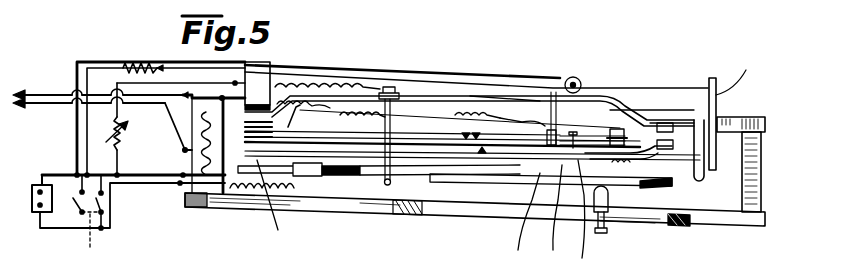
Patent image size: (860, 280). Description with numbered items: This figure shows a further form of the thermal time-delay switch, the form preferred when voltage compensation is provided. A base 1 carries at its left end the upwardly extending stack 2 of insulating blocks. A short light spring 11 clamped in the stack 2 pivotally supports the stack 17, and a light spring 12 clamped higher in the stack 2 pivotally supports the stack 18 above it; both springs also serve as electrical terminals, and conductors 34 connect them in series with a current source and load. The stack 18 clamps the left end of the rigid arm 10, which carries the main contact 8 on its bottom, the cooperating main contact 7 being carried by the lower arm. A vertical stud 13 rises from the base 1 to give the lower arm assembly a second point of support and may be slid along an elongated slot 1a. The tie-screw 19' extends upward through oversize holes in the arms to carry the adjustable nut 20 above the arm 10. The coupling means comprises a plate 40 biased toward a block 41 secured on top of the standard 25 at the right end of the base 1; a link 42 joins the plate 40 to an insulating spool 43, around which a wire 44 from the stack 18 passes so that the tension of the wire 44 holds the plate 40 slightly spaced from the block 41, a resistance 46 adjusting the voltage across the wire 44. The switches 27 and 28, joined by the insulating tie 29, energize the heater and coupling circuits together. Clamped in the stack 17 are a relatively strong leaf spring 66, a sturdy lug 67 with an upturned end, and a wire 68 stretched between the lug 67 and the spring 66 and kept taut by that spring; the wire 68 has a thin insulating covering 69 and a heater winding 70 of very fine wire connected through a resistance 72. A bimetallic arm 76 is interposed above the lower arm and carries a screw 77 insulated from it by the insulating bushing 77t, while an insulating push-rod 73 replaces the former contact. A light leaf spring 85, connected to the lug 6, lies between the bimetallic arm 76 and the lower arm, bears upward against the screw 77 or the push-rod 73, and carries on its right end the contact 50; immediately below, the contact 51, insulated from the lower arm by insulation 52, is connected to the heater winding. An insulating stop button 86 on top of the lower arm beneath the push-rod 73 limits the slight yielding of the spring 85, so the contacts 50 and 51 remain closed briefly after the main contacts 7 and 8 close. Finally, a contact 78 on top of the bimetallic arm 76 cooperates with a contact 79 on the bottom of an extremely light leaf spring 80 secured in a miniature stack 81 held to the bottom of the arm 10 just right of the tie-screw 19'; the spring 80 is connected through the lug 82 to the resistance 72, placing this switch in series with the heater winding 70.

The base 1 is at (246, 208).
The elongated slot 1a is at (422, 214).
The stack of insulating blocks 2 is at (202, 208).
The lug 6 is at (190, 170).
The switch contact 7 is at (673, 146).
The switch contact 8 is at (673, 129).
The arm 10 is at (512, 80).
The spring 11 is at (183, 149).
The spring 12 is at (186, 95).
The stud 13 is at (610, 205).
The stack 17 is at (375, 203).
The stack 18 is at (270, 62).
The tie-screw 19' is at (460, 121).
The adjustable nut 20 is at (392, 87).
The standard 25 is at (753, 160).
The switch 27 is at (78, 208).
The switch 28 is at (110, 214).
The insulating tie 29 is at (93, 238).
The conductors 34 is at (42, 95).
The plate 40 is at (739, 75).
The block 41 is at (730, 117).
The link 42 is at (697, 88).
The spool 43 is at (579, 78).
The wire 44 is at (364, 86).
The resistance 46 is at (123, 68).
The contact 50 is at (620, 153).
The contact 51 is at (625, 160).
The insulation 52 is at (584, 217).
The leaf spring 66 is at (342, 116).
The lug 67 is at (469, 114).
The wire 68 is at (320, 110).
The insulating covering 69 is at (446, 113).
The heater winding 70 is at (500, 118).
The resistance 72 is at (120, 139).
The push-rod 73 is at (552, 92).
The bimetallic arm 76 is at (628, 112).
The screw 77 is at (595, 140).
The insulating bushing 77t is at (610, 136).
The contact 78 is at (625, 139).
The contact 79 is at (648, 118).
The leaf spring 80 is at (615, 130).
The miniature stack 81 is at (470, 96).
The lug 82 is at (234, 83).
The leaf spring 85 is at (558, 215).
The insulating stop button 86 is at (525, 219).